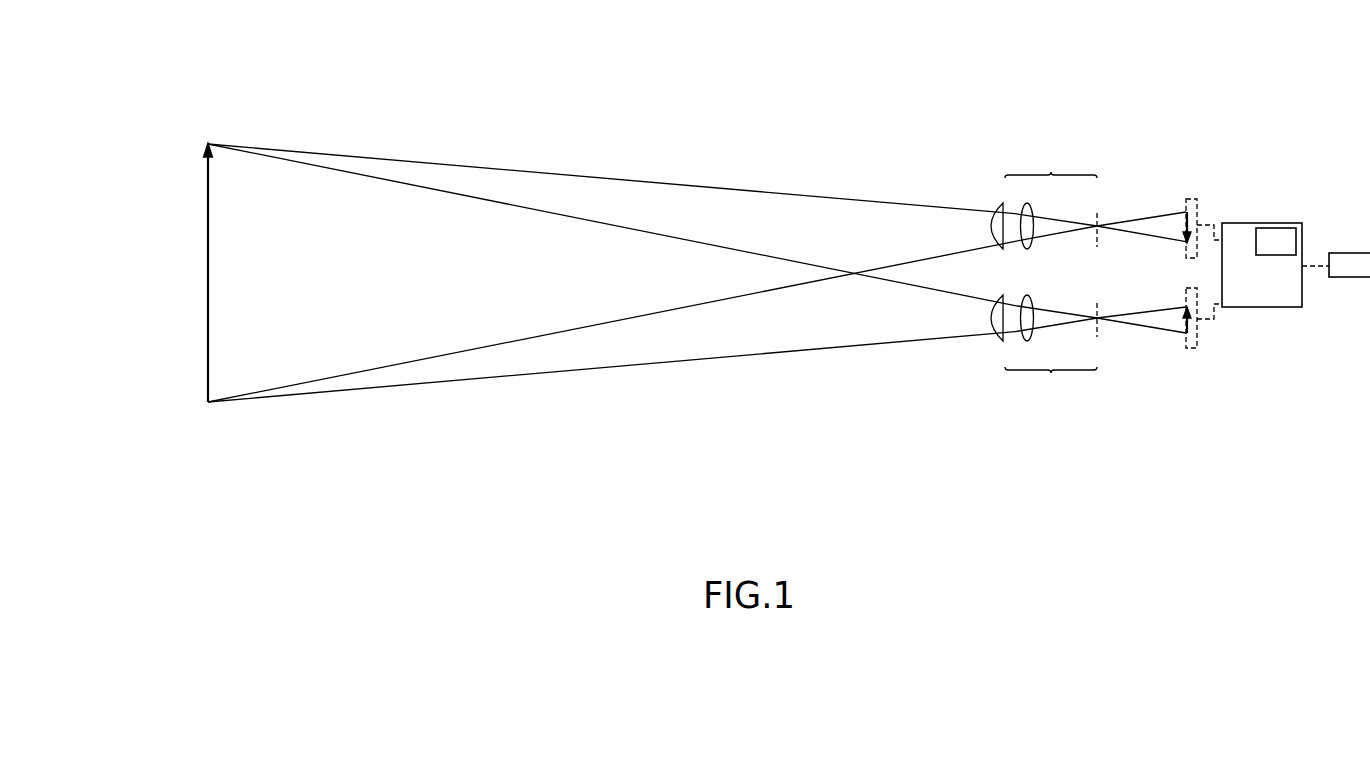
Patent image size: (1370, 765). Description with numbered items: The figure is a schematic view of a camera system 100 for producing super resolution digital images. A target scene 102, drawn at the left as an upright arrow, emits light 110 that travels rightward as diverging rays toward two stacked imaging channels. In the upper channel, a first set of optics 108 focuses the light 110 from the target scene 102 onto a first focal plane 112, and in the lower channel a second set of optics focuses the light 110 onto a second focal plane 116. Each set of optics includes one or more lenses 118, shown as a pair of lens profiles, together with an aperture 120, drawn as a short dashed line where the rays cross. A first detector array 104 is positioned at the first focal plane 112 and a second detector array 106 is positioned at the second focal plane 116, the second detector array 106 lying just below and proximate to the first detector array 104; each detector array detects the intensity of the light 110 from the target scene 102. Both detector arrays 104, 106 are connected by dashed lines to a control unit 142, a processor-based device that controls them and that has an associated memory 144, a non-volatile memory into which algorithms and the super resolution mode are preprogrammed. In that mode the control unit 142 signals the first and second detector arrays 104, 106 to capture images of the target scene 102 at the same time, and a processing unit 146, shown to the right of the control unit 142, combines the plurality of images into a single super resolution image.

The camera system 100 is at (875, 100).
The target scene 102 is at (199, 256).
The first detector array 104 is at (1192, 199).
The second detector array 106 is at (1192, 348).
The first set of optics 108 is at (1051, 274).
The light 110 is at (645, 181).
The first focal plane 112 is at (1093, 217).
The second focal plane 116 is at (1095, 329).
The lenses 118 is at (1027, 203).
The aperture 120 is at (1099, 213).
The control unit 142 is at (1262, 265).
The memory 144 is at (1276, 241).
The processing unit 146 is at (1336, 265).